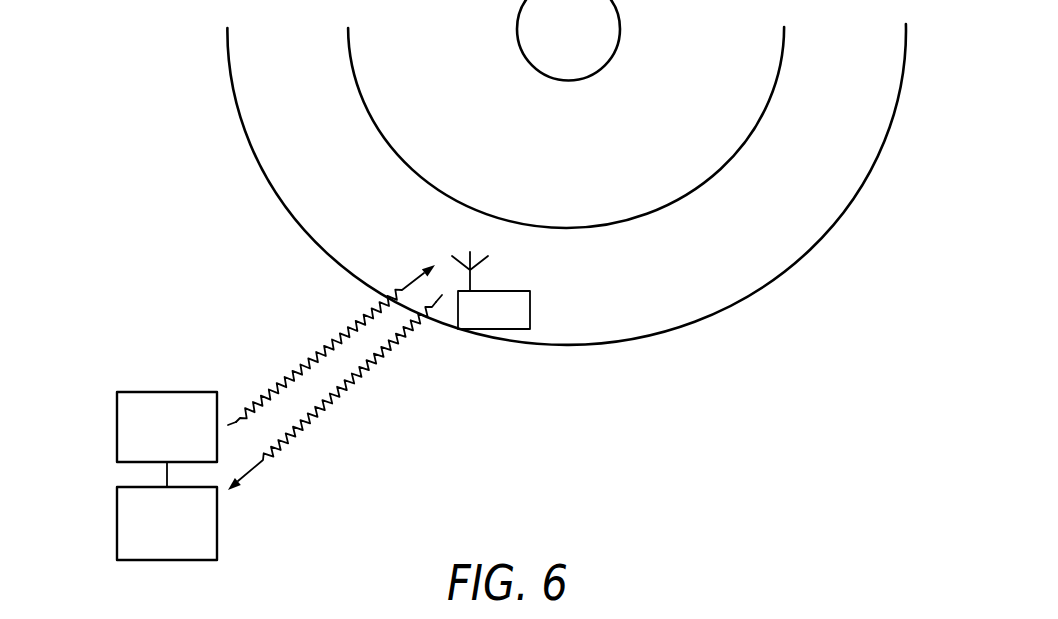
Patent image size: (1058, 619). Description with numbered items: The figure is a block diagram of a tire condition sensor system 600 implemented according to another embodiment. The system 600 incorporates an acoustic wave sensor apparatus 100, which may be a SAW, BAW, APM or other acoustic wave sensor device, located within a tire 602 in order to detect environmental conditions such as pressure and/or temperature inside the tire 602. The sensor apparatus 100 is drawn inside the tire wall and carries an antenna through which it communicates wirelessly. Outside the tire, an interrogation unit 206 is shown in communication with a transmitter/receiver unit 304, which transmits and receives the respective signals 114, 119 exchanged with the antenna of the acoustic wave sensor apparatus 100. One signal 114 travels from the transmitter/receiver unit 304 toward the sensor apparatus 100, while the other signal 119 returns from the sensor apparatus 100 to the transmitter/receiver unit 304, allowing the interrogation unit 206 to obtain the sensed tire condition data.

The tire condition sensor system 600 is at (128, 238).
The tire 602 is at (703, 285).
The acoustic wave sensor apparatus 100 is at (552, 300).
The signal 114 is at (308, 360).
The signal 119 is at (332, 398).
The transmitter/receiver unit 304 is at (186, 441).
The interrogation unit 206 is at (186, 538).